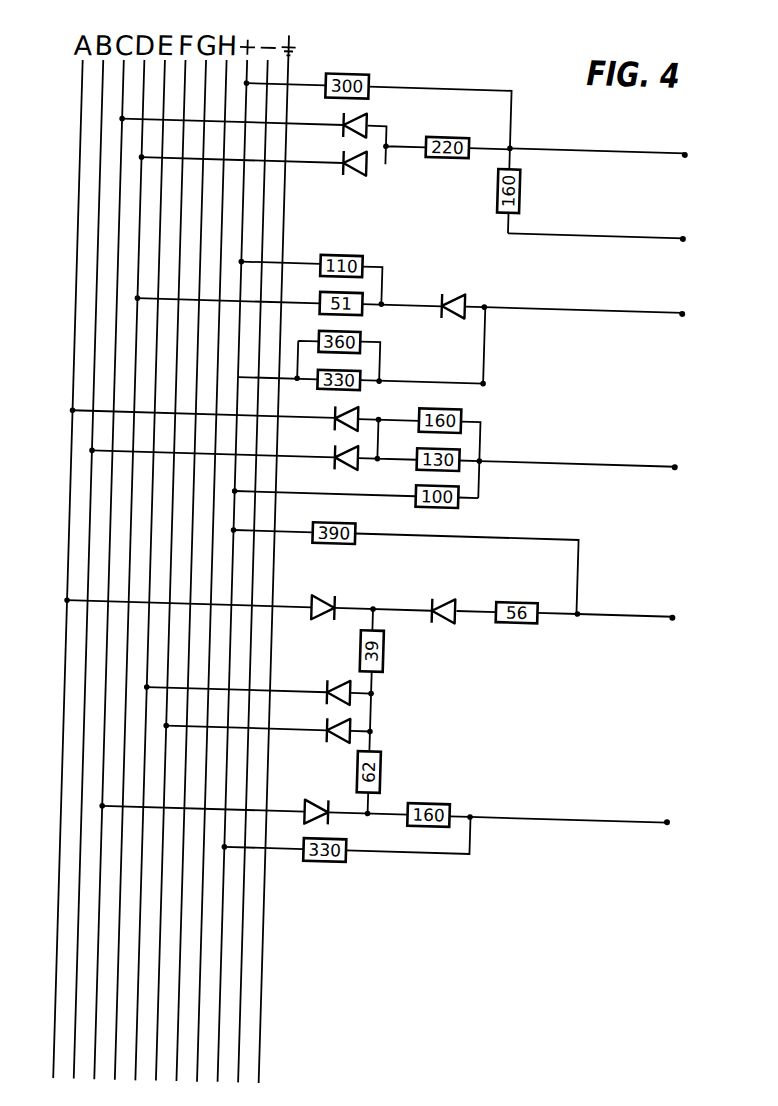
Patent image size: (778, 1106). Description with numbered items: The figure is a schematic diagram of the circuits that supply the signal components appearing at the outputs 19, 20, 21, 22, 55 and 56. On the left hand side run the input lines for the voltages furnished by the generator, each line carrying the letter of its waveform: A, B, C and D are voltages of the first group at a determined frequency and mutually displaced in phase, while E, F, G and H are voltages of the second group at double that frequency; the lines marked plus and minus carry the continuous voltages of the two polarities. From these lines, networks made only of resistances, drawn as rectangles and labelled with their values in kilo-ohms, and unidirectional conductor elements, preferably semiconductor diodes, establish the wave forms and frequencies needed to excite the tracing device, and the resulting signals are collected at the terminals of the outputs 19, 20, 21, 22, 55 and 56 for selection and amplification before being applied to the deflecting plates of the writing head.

The output 19 is at (599, 139).
The output 20 is at (597, 224).
The output 21 is at (585, 299).
The output 22 is at (578, 452).
The output 55 is at (626, 604).
The output 56 is at (570, 808).